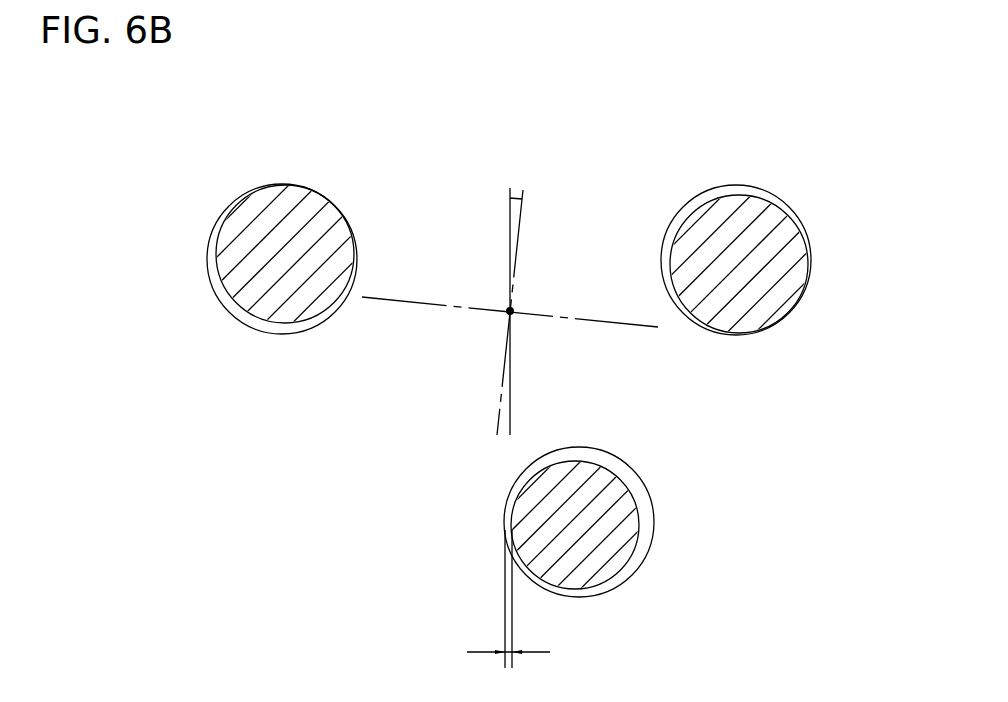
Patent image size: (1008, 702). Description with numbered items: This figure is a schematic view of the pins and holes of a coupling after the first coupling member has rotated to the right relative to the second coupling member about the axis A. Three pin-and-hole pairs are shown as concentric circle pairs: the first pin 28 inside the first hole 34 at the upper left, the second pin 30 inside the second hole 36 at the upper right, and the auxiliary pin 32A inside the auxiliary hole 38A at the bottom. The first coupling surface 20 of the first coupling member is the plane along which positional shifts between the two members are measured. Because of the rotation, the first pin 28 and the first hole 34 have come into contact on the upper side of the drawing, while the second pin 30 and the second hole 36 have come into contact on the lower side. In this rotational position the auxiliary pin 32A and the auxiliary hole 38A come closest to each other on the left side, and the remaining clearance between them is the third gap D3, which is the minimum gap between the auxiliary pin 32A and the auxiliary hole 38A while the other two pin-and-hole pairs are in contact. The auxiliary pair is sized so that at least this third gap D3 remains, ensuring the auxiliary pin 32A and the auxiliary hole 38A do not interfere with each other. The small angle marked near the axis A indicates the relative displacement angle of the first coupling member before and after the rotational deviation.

The first pin 28 is at (241, 221).
The first hole 34 is at (238, 326).
The second pin 30 is at (797, 256).
The second hole 36 is at (773, 193).
The auxiliary pin 32A is at (627, 533).
The auxiliary hole 38A is at (618, 588).
The first coupling surface 20 is at (649, 536).
The axis A is at (511, 309).
The third gap D3 is at (503, 599).